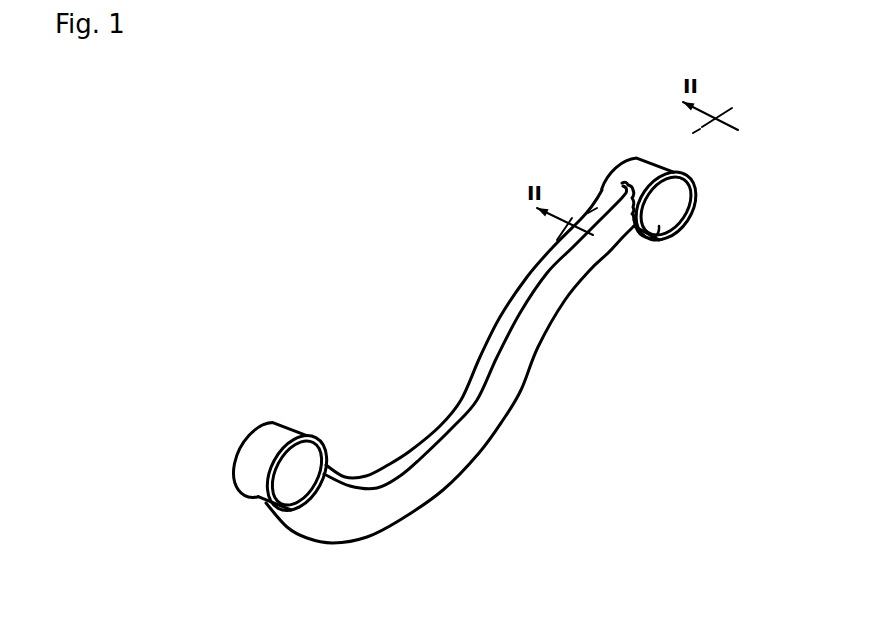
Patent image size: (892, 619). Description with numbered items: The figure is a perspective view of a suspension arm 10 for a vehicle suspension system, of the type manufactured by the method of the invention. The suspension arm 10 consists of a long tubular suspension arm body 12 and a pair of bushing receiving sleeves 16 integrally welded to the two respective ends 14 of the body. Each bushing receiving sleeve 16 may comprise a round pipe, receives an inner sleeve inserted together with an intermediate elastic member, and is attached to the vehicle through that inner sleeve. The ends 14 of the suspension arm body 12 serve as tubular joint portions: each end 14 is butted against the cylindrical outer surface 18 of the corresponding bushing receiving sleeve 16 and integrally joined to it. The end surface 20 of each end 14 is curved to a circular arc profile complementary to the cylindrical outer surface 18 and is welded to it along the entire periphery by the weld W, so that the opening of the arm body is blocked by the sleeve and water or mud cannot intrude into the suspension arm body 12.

The suspension arm 10 is at (377, 252).
The suspension arm body 12 is at (532, 440).
The end 14 is at (619, 231).
The bushing receiving sleeve 16 is at (709, 216).
The cylindrical outer surface 18 is at (647, 168).
The end surface 20 is at (657, 235).
The weld W is at (625, 177).